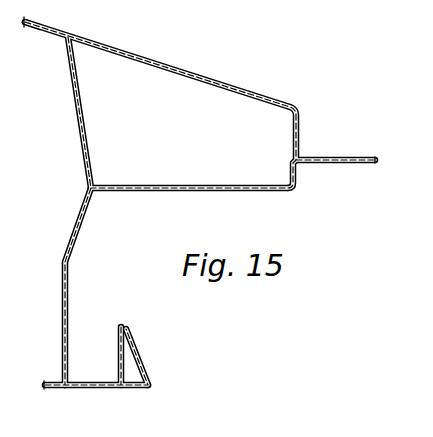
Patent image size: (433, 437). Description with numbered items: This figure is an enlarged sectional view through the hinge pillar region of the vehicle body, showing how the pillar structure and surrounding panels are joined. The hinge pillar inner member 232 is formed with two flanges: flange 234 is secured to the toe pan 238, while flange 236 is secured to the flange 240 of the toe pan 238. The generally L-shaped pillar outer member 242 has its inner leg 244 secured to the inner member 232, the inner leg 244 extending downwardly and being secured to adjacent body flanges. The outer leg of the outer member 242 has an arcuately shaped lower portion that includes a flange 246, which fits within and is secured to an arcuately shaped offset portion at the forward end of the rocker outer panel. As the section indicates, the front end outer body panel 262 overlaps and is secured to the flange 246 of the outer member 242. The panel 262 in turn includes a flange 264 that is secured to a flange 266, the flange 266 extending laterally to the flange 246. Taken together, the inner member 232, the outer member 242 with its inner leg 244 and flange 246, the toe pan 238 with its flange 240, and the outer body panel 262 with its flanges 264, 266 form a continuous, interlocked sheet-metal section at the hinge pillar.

The hinge pillar inner member 232 is at (89, 141).
The flange 234 is at (40, 31).
The flange 236 is at (337, 164).
The toe pan 238 is at (186, 70).
The flange 240 is at (319, 157).
The pillar outer member 242 is at (68, 262).
The inner leg 244 is at (183, 192).
The flange 246 is at (79, 381).
The front end outer body panel 262 is at (60, 389).
The flange 264 is at (126, 348).
The flange 266 is at (118, 326).